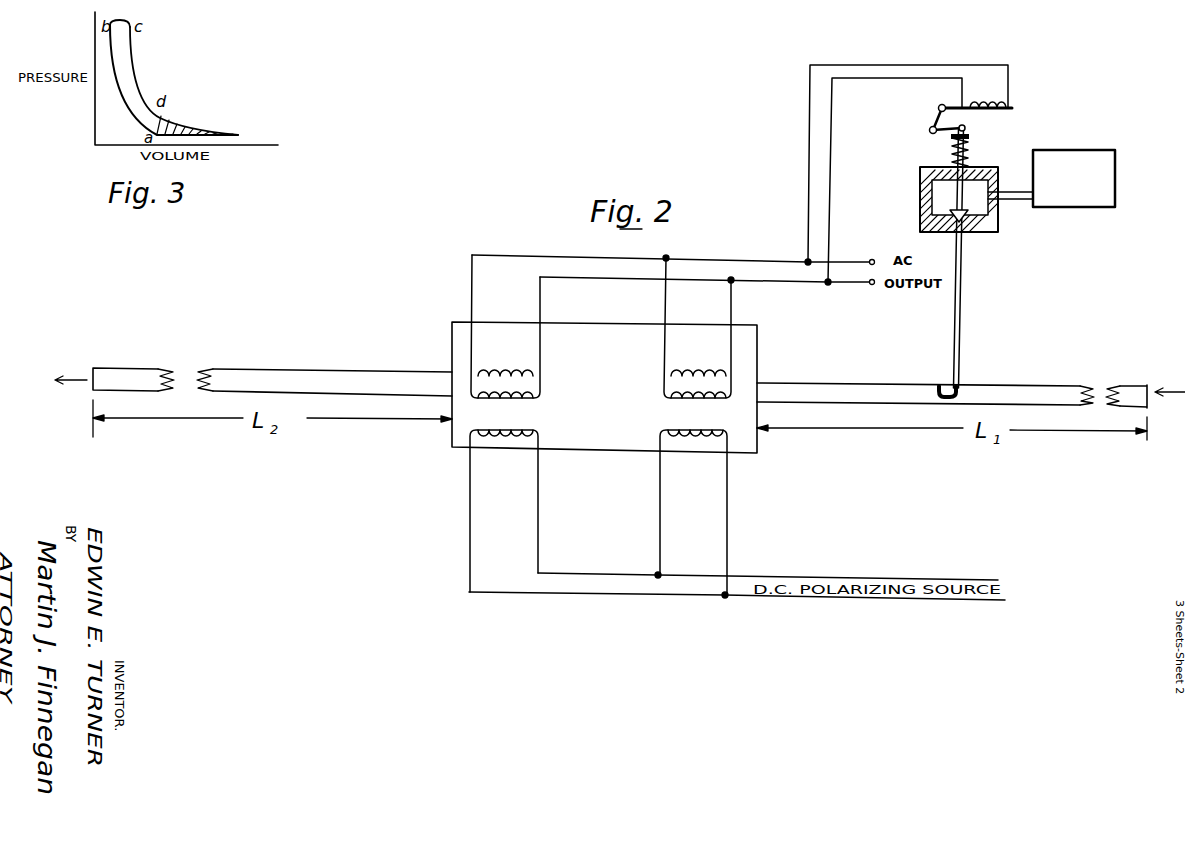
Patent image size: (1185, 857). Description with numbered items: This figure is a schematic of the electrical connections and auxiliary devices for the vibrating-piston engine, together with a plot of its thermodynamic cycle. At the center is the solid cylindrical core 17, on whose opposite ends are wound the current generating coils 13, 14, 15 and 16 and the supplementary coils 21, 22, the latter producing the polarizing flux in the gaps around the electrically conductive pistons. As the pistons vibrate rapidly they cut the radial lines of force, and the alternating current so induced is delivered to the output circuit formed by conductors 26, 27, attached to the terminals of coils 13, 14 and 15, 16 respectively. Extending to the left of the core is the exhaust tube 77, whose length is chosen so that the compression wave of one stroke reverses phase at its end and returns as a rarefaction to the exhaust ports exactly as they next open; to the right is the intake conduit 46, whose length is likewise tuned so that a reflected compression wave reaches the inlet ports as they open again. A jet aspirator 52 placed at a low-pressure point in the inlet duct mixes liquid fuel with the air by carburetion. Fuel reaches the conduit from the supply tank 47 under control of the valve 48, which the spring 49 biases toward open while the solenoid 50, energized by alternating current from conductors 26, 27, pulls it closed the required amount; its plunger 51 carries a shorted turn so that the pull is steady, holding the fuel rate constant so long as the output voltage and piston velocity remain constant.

The current generating coil 13 is at (531, 372).
The current generating coil 14 is at (490, 402).
The current generating coil 15 is at (712, 350).
The current generating coil 16 is at (684, 406).
The solid cylindrical core 17 is at (620, 400).
The supplementary coil 21 is at (520, 432).
The supplementary coil 22 is at (672, 437).
The conductor 26 is at (535, 289).
The conductor 27 is at (731, 298).
The intake conduit 46 is at (850, 382).
The supply tank 47 is at (1058, 151).
The valve 48 is at (967, 222).
The spring 49 is at (970, 158).
The solenoid 50 is at (990, 112).
The plunger 51 is at (958, 105).
The jet aspirator 52 is at (962, 386).
The exhaust tube 77 is at (412, 358).